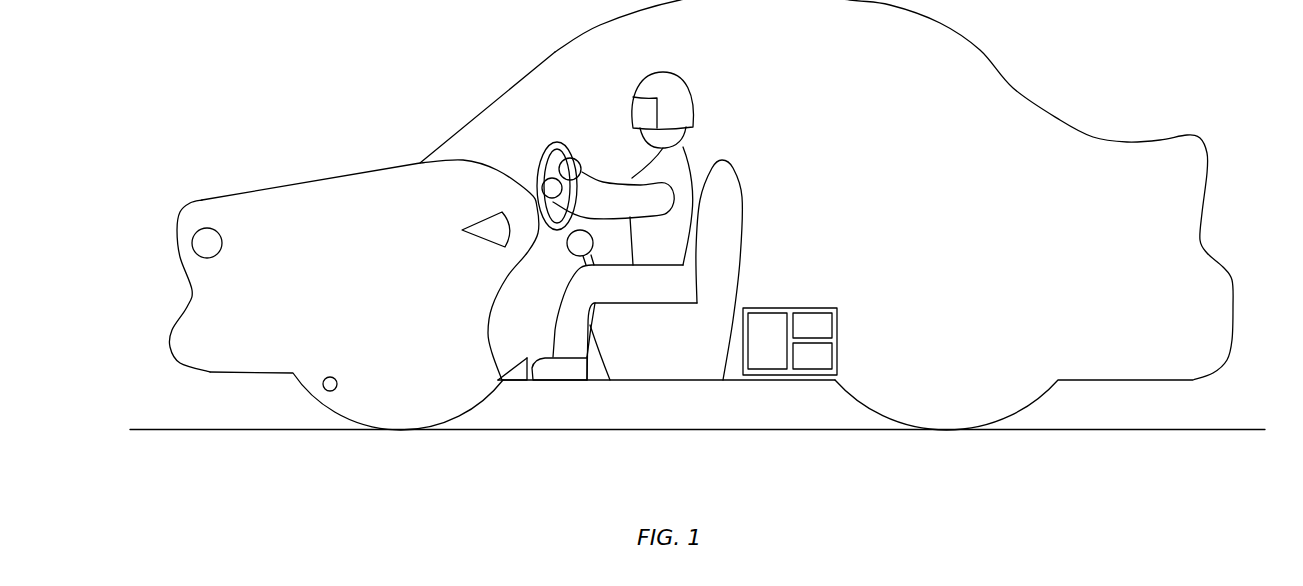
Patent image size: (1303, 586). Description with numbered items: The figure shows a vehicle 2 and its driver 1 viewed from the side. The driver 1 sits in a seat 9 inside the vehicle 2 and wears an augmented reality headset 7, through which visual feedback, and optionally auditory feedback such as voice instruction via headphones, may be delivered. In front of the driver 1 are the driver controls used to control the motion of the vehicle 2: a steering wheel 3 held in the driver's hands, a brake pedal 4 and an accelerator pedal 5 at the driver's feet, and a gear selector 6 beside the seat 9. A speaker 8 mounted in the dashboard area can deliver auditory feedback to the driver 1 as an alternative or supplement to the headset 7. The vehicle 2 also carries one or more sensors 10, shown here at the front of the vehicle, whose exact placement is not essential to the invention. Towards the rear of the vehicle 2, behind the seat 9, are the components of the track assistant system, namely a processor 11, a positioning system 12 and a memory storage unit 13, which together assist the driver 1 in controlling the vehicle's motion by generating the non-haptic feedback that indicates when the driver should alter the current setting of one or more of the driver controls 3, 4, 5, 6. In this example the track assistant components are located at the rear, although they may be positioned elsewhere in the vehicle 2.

The driver 1 is at (687, 153).
The vehicle 2 is at (202, 200).
The steering wheel 3 is at (560, 141).
The brake pedal 4 is at (518, 377).
The accelerator pedal 5 is at (510, 372).
The gear selector 6 is at (568, 253).
The augmented reality headset 7 is at (675, 73).
The speaker 8 is at (480, 240).
The seat 9 is at (675, 368).
The sensor 10 is at (222, 243).
The processor 11 is at (767, 313).
The positioning system 12 is at (833, 323).
The memory storage unit 13 is at (833, 353).